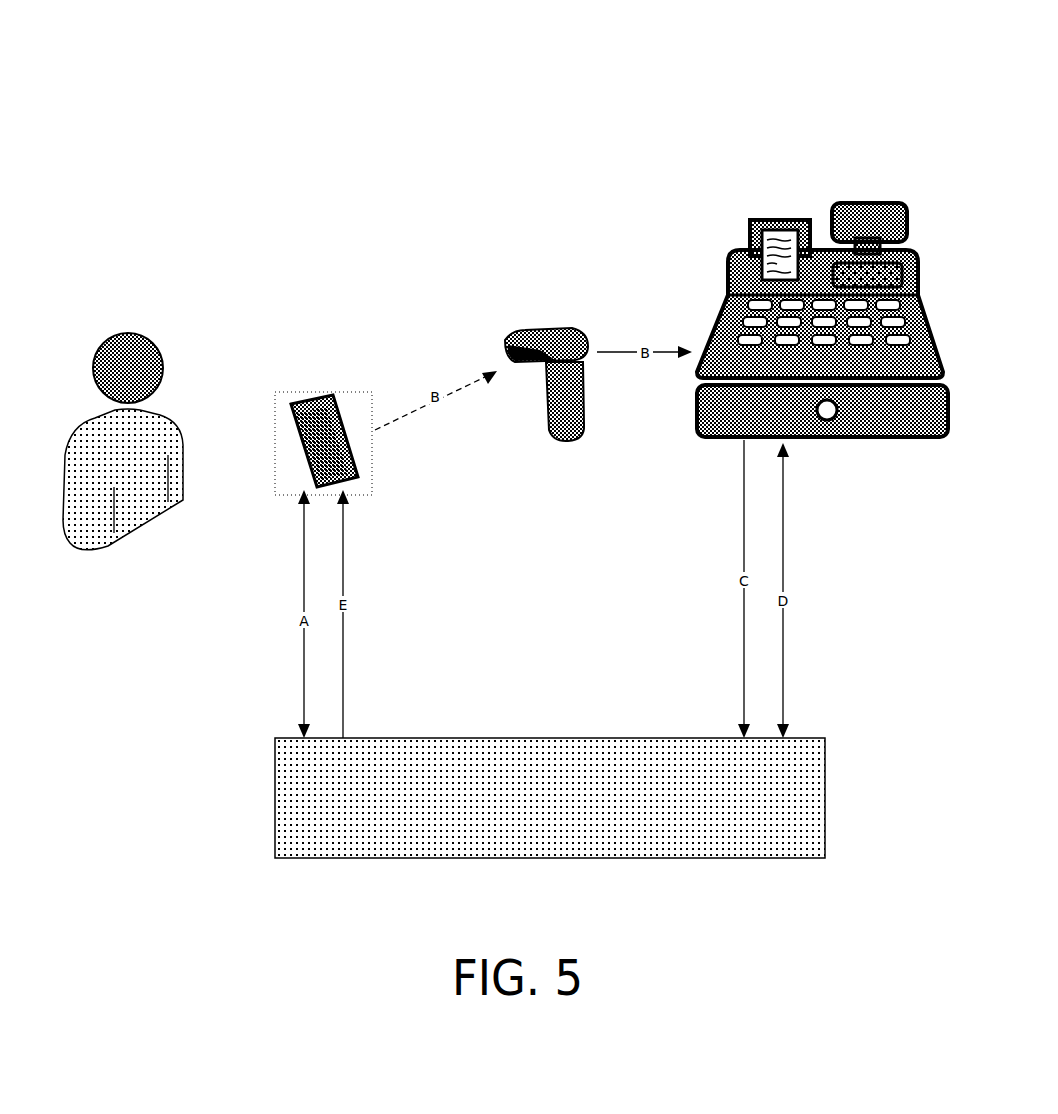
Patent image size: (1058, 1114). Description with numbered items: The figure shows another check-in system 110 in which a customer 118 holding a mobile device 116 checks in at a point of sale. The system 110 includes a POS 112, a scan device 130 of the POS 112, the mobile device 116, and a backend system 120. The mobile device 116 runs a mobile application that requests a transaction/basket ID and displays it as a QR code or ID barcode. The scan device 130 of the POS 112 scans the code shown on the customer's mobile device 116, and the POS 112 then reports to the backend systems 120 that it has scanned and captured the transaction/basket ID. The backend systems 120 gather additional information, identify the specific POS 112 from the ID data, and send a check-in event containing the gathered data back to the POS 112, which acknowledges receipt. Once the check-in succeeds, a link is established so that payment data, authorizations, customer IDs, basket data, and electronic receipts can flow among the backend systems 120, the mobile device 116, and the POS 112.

The check-in system 110 is at (514, 106).
The POS 112 is at (829, 206).
The mobile device 116 is at (323, 394).
The customer 118 is at (137, 332).
The backend system 120 is at (318, 838).
The scan device 130 is at (545, 330).